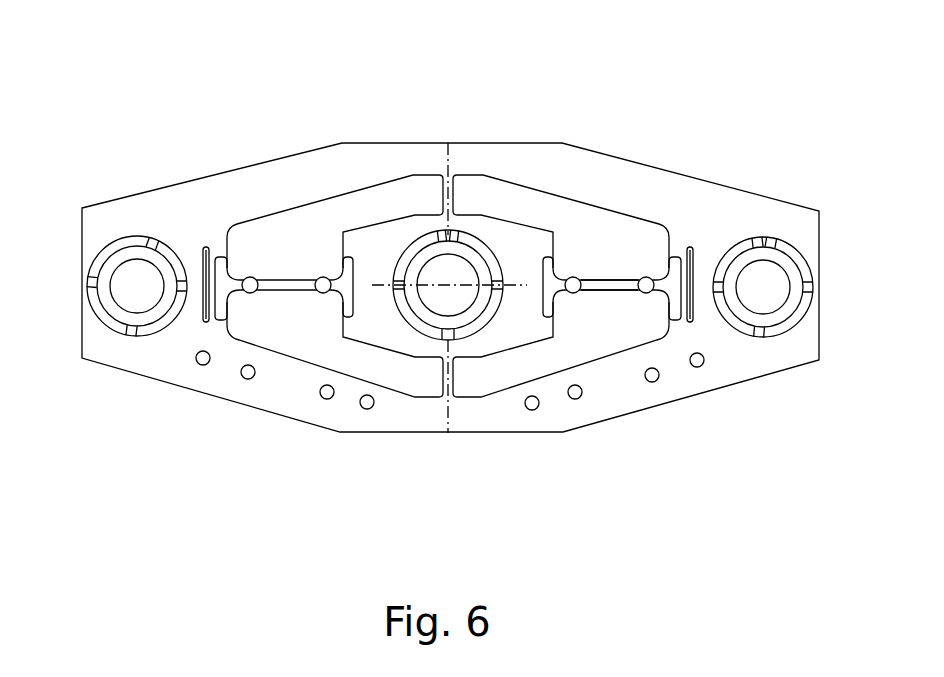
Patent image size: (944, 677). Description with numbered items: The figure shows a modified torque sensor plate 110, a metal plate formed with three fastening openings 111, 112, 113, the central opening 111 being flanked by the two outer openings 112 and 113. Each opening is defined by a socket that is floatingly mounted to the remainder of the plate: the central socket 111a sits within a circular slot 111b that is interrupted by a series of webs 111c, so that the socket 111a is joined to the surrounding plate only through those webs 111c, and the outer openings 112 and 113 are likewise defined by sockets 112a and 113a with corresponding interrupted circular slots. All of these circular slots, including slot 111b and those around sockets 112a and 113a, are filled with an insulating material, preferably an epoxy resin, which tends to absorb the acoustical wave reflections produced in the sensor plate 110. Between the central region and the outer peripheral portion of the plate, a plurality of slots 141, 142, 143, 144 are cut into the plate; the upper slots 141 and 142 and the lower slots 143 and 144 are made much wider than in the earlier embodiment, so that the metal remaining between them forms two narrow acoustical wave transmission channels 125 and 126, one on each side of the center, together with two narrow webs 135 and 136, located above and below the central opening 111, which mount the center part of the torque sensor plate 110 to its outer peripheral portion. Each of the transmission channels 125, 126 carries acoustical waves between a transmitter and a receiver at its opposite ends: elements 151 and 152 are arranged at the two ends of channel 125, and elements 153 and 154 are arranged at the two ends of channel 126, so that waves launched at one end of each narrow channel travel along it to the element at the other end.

The torque sensor plate 110 is at (97, 160).
The fastening opening 111 is at (477, 196).
The socket 111a is at (433, 277).
The circular slot 111b is at (452, 227).
The webs 111c is at (482, 260).
The fastening opening 112 is at (106, 230).
The socket 112a is at (158, 258).
The fastening opening 113 is at (800, 239).
The socket 113a is at (755, 252).
The acoustical wave transmission channel 125 is at (228, 318).
The acoustical wave transmission channel 126 is at (618, 280).
The narrow web 135 is at (447, 395).
The narrow web 136 is at (449, 145).
The slot 141 is at (305, 220).
The slot 142 is at (620, 228).
The slot 143 is at (283, 340).
The slot 144 is at (600, 347).
The transmitter 151 is at (250, 285).
The receiver 152 is at (323, 288).
The transmitter 153 is at (573, 292).
The receiver 154 is at (645, 293).